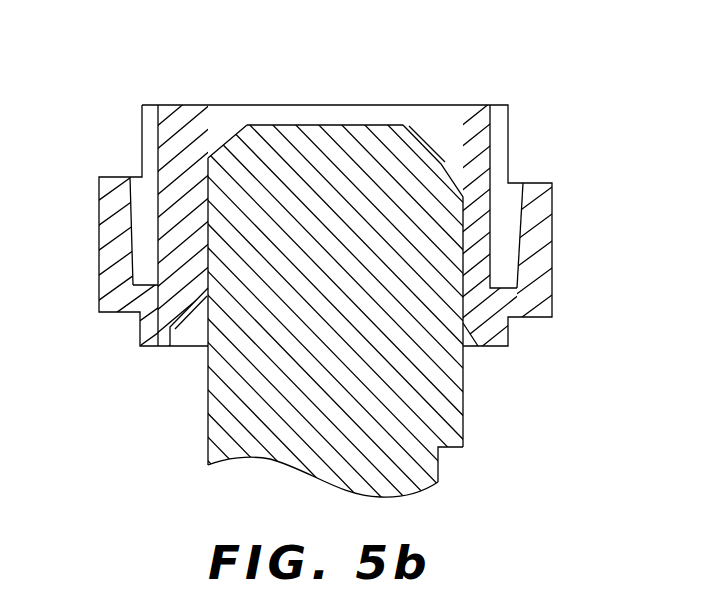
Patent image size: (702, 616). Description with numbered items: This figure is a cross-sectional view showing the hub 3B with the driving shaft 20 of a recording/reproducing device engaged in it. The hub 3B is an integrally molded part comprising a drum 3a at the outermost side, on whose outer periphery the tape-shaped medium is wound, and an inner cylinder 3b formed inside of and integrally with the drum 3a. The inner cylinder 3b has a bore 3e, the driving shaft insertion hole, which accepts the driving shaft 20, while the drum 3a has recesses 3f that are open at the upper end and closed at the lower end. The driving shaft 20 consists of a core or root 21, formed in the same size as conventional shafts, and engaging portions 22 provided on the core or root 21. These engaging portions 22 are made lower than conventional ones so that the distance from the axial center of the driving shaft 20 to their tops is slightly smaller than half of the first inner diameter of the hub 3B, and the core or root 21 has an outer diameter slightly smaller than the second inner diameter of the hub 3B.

The hub 3B is at (143, 139).
The drum 3a is at (553, 250).
The inner cylinder 3b is at (478, 122).
The bore 3e is at (432, 125).
The recess 3f is at (513, 217).
The driving shaft 20 is at (540, 366).
The core or root 21 is at (423, 461).
The engaging portions 22 is at (462, 392).